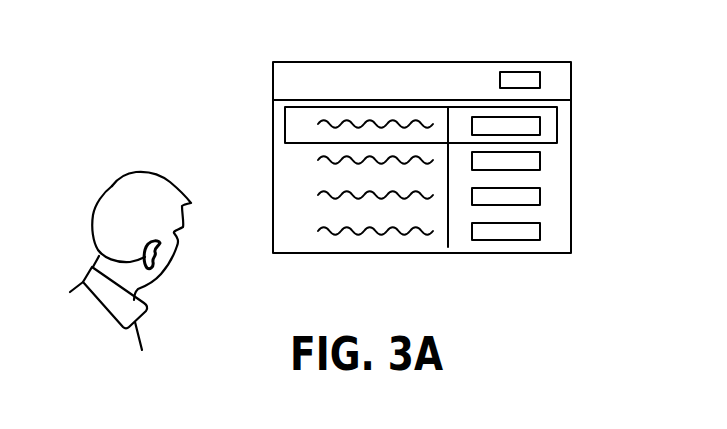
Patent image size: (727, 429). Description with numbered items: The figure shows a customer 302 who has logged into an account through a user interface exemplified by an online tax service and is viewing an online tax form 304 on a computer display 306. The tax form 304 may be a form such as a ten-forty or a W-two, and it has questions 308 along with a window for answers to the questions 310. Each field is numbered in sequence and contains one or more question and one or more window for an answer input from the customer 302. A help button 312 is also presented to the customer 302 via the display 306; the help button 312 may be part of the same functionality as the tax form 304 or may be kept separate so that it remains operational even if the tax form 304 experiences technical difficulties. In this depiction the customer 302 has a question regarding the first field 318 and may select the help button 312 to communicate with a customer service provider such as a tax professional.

The customer 302 is at (103, 192).
The online tax form 304 is at (283, 120).
The computer display 306 is at (405, 56).
The questions 308 is at (402, 237).
The window for answers 310 is at (540, 230).
The help button 312 is at (522, 78).
The first field 318 is at (547, 125).